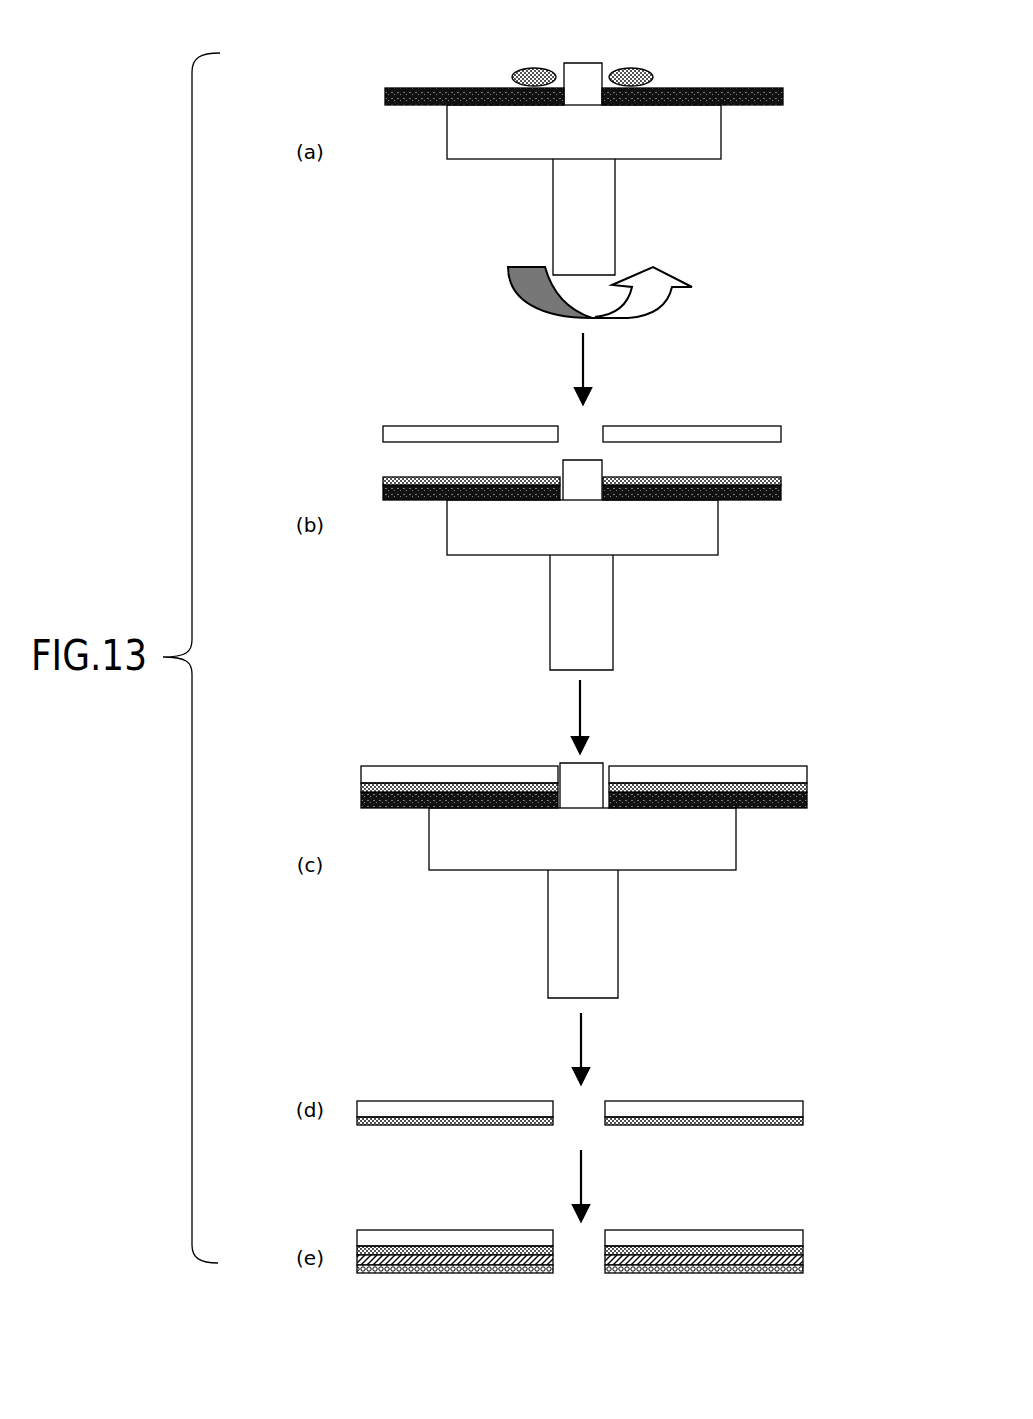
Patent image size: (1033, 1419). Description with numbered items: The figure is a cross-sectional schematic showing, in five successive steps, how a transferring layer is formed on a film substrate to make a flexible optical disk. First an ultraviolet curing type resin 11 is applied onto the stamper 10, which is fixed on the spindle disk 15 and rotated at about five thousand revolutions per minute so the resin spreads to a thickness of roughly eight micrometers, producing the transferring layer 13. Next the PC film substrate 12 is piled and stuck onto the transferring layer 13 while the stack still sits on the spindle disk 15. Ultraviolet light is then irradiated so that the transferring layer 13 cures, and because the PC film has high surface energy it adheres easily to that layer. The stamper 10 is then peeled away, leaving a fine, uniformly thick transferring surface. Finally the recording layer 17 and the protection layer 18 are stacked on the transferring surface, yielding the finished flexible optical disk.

The stamper 10 is at (728, 88).
The ultraviolet curing type resin 11 is at (520, 72).
The PC film substrate 12 is at (758, 431).
The transferring layer 13 is at (748, 483).
The spindle disk 15 is at (708, 135).
The recording layer 17 is at (798, 1258).
The protection layer 18 is at (800, 1268).